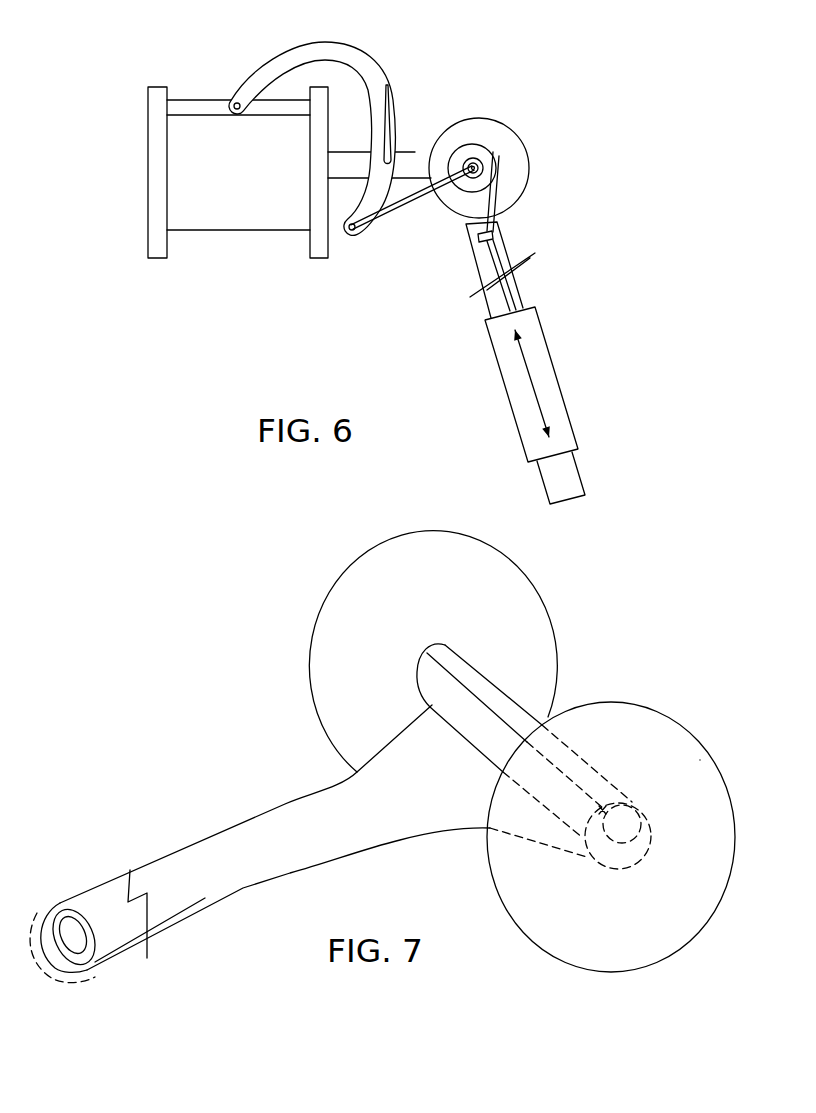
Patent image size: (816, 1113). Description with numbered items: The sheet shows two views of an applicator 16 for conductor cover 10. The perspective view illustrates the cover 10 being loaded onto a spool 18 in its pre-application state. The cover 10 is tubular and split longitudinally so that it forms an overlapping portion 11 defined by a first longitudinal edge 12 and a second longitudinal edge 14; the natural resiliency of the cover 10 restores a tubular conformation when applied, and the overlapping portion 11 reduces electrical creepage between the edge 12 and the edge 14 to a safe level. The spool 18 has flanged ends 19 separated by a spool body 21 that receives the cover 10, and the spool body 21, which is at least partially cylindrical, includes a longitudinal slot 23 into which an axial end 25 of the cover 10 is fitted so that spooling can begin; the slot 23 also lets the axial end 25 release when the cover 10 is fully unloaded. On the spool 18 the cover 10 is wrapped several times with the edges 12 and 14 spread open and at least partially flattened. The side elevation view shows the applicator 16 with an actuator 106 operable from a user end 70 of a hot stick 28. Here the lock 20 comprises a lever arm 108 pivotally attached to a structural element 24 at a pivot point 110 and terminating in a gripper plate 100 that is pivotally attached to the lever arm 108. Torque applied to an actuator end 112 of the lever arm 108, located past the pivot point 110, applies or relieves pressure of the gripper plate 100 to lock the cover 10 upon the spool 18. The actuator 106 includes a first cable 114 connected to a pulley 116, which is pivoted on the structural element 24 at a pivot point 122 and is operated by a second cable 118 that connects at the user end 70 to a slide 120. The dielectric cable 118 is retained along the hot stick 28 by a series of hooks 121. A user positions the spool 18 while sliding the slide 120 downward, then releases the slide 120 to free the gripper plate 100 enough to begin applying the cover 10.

In FIG. 6, the conductor cover 10 is at (263, 233).
In FIG. 7, the conductor cover 10 is at (148, 858).
In FIG. 7, the overlapping portion 11 is at (45, 963).
In FIG. 7, the first longitudinal edge 12 is at (85, 928).
In FIG. 7, the second longitudinal edge 14 is at (110, 957).
In FIG. 6, the applicator 16 is at (595, 122).
In FIG. 7, the applicator 16 is at (688, 597).
In FIG. 6, the spool 18 is at (168, 248).
In FIG. 7, the spool 18 is at (678, 743).
In FIG. 7, the flanged ends 19 is at (383, 537).
In FIG. 6, the lock 20 is at (238, 71).
In FIG. 6, the gripper plate 100 is at (192, 100).
In FIG. 7, the spool body 21 is at (467, 723).
In FIG. 7, the longitudinal slot 23 is at (447, 674).
In FIG. 6, the structural element 24 is at (415, 150).
In FIG. 7, the axial end 25 is at (627, 842).
In FIG. 6, the hot stick 28 is at (523, 289).
In FIG. 6, the user end 70 is at (580, 413).
In FIG. 6, the actuator 106 is at (573, 324).
In FIG. 6, the lever arm 108 is at (330, 58).
In FIG. 6, the pivot point 110 is at (388, 87).
In FIG. 6, the actuator end 112 is at (350, 238).
In FIG. 6, the first cable 114 is at (408, 202).
In FIG. 6, the pulley 116 is at (493, 167).
In FIG. 6, the second cable 118 is at (497, 252).
In FIG. 6, the slide 120 is at (562, 388).
In FIG. 6, the hooks 121 is at (490, 234).
In FIG. 6, the pivot point 122 is at (478, 157).